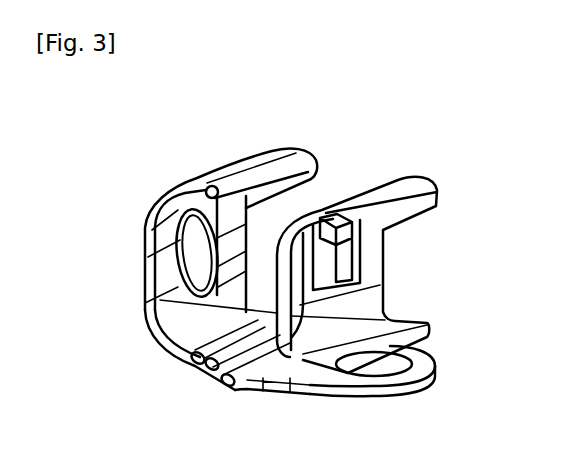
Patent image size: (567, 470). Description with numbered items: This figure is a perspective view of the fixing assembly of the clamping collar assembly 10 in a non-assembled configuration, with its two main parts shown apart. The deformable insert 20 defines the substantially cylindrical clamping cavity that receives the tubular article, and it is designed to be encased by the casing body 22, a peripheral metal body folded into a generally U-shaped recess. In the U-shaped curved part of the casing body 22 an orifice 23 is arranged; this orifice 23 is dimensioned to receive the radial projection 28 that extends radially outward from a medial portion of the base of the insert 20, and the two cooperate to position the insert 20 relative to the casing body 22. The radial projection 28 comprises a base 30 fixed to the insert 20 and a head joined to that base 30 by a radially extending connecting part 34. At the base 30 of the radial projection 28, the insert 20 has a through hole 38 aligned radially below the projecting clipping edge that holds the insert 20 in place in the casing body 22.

The clamping collar assembly 10 is at (372, 124).
The deformable insert 20 is at (385, 197).
The casing body 22 is at (241, 160).
The orifice 23 is at (188, 266).
The radial projection 28 is at (272, 250).
The base 30 is at (327, 292).
The connecting part 34 is at (328, 300).
The through hole 38 is at (384, 257).